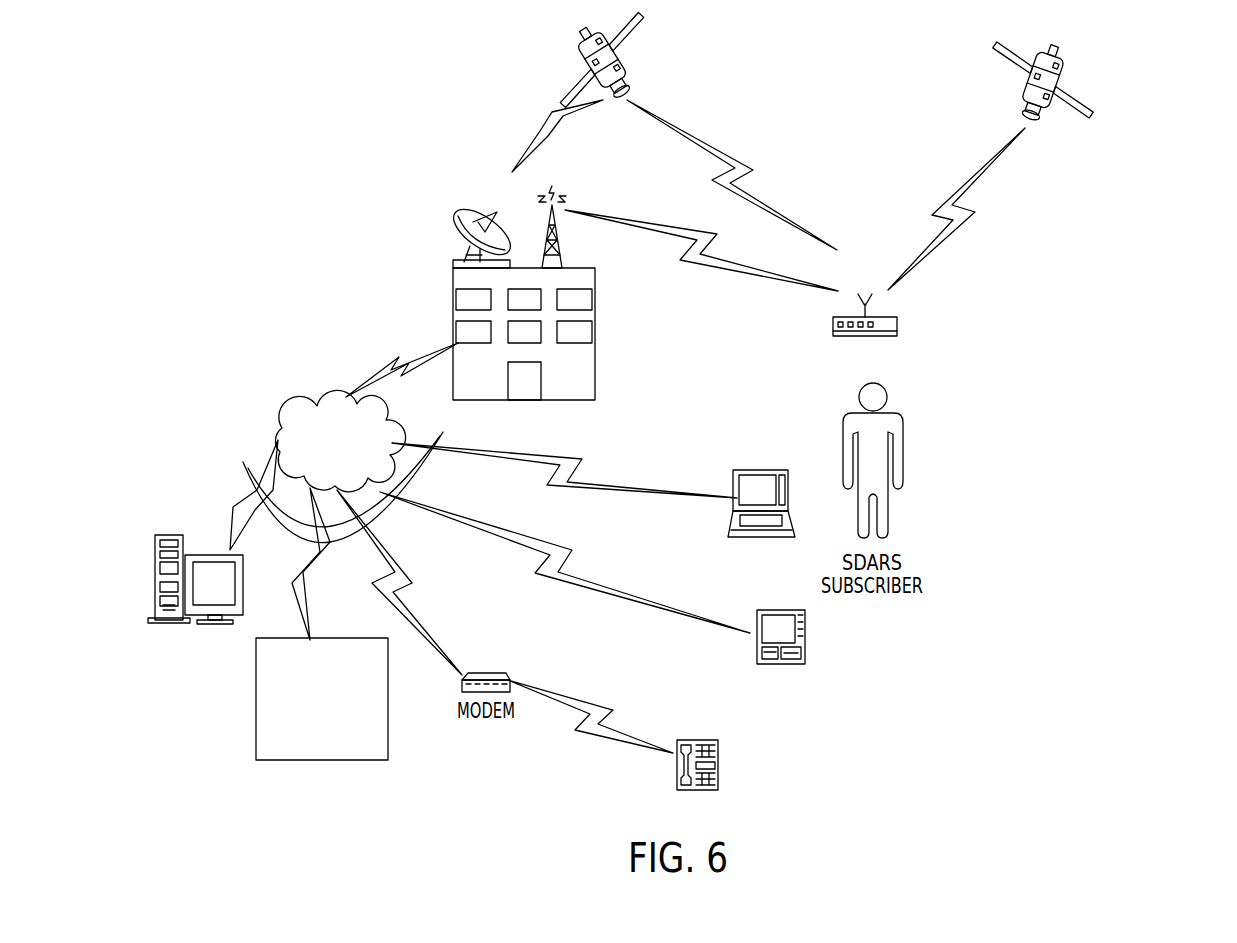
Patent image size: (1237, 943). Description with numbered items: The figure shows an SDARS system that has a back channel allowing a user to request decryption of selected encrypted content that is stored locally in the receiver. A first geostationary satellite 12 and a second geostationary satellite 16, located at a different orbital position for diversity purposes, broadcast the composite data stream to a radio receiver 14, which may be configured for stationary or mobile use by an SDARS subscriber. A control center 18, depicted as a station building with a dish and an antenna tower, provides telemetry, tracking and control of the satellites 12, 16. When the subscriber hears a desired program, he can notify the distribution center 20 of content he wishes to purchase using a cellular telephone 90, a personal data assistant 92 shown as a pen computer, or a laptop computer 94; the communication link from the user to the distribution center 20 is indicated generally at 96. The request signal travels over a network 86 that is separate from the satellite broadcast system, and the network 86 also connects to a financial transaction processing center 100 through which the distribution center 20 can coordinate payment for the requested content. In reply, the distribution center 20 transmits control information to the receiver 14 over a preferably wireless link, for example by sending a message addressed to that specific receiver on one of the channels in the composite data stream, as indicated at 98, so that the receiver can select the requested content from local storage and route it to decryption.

The geostationary satellite 12 is at (578, 47).
The geostationary satellite 16 is at (1063, 70).
The receiver unit 14 is at (897, 328).
The control center 18 is at (596, 372).
The network 86 is at (316, 392).
The message channel 98 is at (400, 352).
The communication link 96 is at (395, 540).
The laptop computer 94 is at (764, 468).
The personal data assistant 92 is at (806, 640).
The telephone 90 is at (719, 768).
The distribution center 20 is at (212, 622).
The financial transaction processing center 100 is at (322, 762).